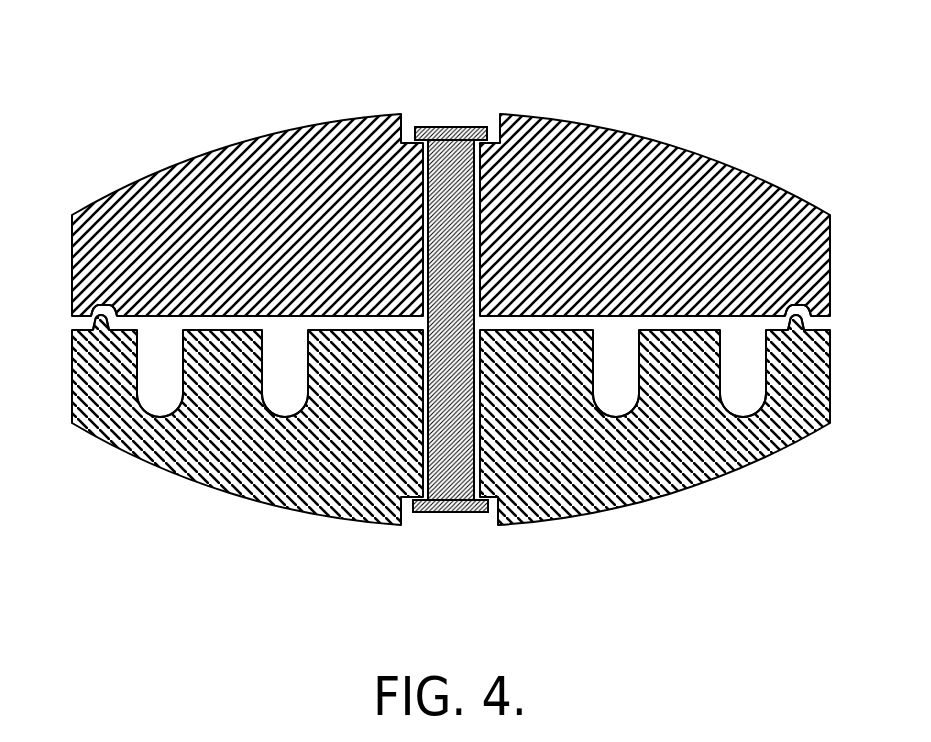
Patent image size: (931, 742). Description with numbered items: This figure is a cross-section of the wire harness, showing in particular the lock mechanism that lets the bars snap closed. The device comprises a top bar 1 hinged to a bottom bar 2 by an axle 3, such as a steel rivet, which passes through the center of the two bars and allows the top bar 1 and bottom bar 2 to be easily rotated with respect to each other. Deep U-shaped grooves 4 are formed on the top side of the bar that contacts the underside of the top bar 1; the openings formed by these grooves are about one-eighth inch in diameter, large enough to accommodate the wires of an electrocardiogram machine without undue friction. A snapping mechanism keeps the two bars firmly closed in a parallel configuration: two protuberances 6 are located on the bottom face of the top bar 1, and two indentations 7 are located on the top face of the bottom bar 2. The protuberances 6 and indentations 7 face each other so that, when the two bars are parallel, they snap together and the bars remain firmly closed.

The top bar 1 is at (785, 186).
The bottom bar 2 is at (727, 477).
The axle 3 is at (450, 127).
The U-shaped grooves 4 is at (171, 414).
The protuberances 6 is at (92, 323).
The indentations 7 is at (94, 305).